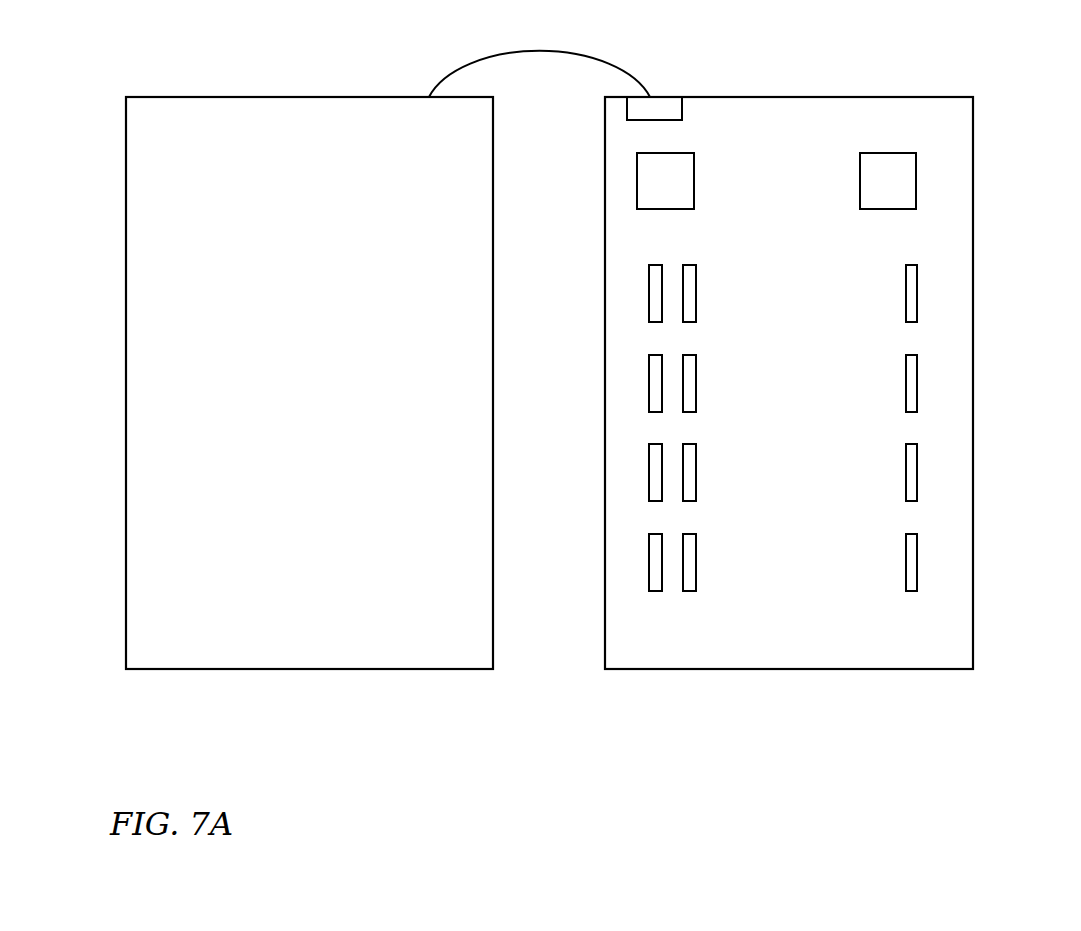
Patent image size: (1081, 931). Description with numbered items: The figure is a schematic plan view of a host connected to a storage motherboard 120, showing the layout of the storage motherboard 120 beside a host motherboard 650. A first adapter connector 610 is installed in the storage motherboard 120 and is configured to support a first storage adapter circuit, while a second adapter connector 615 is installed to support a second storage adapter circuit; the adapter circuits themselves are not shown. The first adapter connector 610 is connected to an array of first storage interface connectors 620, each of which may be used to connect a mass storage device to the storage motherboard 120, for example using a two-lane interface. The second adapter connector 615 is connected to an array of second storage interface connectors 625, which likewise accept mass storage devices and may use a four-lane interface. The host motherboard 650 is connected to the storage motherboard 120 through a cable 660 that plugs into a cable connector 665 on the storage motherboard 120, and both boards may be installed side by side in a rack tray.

The storage motherboard 120 is at (973, 555).
The first adapter connector 610 is at (694, 197).
The second adapter connector 615 is at (860, 160).
The first storage interface connectors 620 is at (649, 290).
The second storage interface connectors 625 is at (906, 290).
The host motherboard 650 is at (494, 659).
The cable 660 is at (631, 63).
The cable connector 665 is at (682, 108).